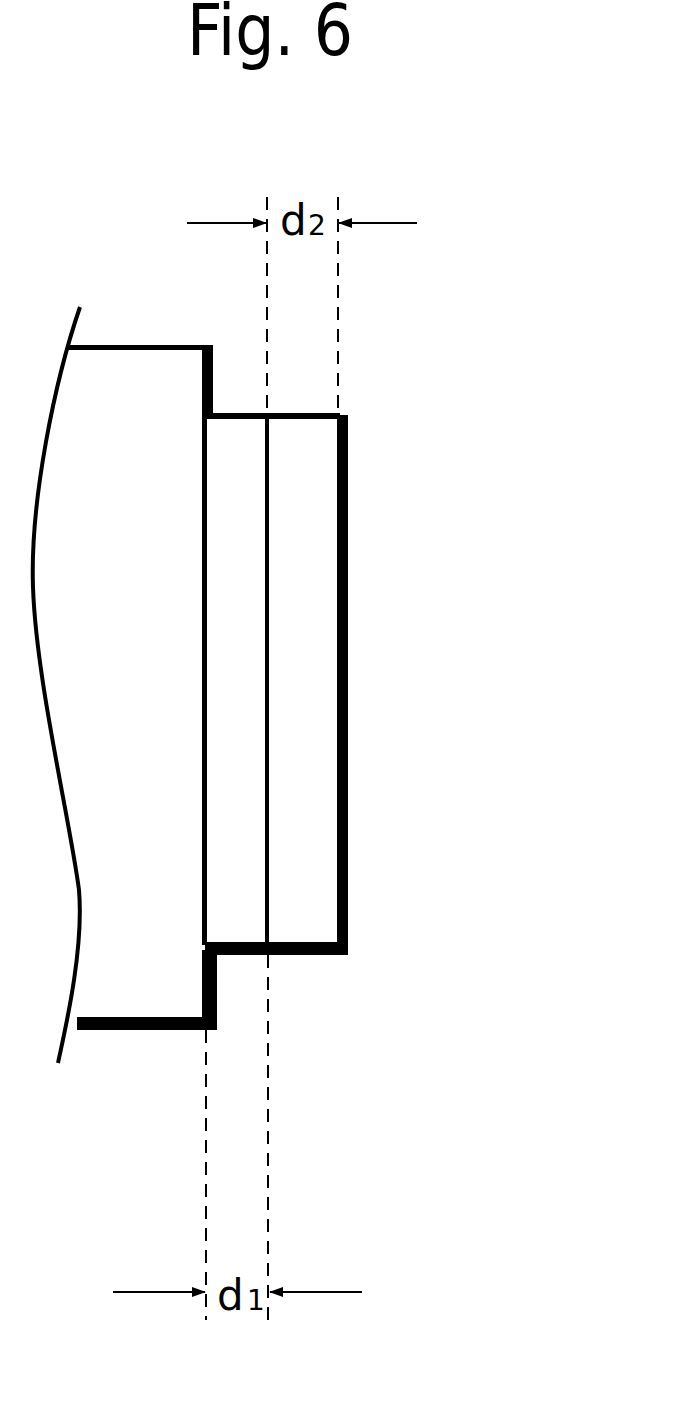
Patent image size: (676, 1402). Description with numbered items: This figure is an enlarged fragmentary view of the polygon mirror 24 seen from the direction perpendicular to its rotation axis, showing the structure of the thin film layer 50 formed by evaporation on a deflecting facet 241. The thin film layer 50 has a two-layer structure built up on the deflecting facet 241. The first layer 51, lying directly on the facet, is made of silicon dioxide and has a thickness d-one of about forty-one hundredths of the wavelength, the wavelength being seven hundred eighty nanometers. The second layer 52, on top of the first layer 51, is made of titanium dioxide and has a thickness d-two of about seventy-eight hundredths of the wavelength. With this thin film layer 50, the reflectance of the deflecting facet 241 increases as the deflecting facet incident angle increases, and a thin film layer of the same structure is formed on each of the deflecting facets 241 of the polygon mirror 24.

The polygon mirror 24 is at (137, 993).
The deflecting facet 241 is at (217, 995).
The thin film layer 50 is at (392, 668).
The first layer 51 is at (240, 493).
The second layer 52 is at (315, 887).